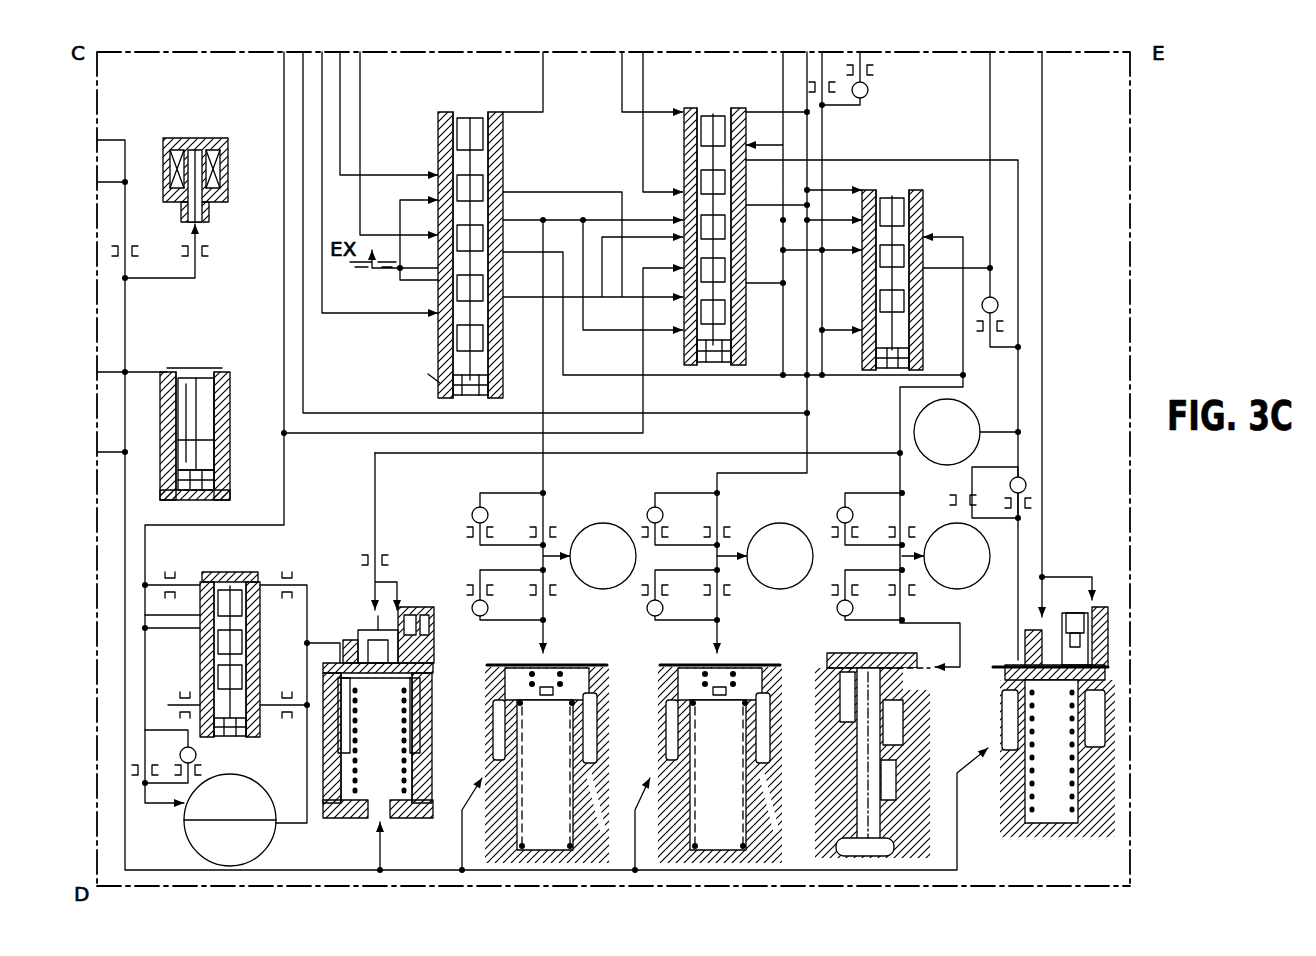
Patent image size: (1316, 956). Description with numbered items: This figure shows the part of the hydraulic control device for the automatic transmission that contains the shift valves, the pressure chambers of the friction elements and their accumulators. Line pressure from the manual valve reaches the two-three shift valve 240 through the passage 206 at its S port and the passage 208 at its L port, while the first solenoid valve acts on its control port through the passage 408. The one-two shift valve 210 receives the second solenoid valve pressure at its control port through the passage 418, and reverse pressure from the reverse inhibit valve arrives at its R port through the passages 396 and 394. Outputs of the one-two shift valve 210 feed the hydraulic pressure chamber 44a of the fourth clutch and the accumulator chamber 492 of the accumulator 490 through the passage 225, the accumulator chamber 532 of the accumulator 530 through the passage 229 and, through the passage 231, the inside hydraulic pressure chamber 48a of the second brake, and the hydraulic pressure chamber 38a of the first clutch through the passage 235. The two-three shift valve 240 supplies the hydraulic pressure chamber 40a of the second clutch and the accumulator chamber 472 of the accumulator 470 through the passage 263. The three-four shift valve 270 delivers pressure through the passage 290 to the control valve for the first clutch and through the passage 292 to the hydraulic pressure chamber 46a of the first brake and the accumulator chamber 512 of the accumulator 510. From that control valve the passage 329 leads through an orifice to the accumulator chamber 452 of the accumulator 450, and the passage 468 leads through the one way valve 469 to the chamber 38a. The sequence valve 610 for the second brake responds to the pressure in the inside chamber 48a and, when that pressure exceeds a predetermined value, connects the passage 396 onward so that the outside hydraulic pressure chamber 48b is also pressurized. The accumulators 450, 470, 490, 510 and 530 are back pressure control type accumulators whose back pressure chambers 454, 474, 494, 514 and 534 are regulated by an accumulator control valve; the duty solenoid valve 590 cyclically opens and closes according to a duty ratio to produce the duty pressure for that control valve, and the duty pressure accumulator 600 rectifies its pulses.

The duty solenoid valve 590 is at (214, 214).
The duty pressure accumulator 600 is at (228, 440).
The passage 208 is at (340, 118).
The passage 206 is at (322, 153).
The passage 396 is at (284, 308).
The passage 394 is at (316, 433).
The 2-3 shift valve 240 is at (438, 390).
The passage 408 is at (543, 86).
The passage 418 is at (622, 118).
The 1-2 shift valve 210 is at (709, 366).
The passage 225 is at (807, 440).
The passage 235 is at (1022, 160).
The passage 290 is at (990, 88).
The passage 329 is at (1042, 92).
The 3-4 shift valve 270 is at (876, 372).
The passage 292 is at (965, 376).
The hydraulic pressure chamber 38a is at (970, 420).
The one way valve 469 is at (1022, 506).
The passage 468 is at (1042, 546).
The hydraulic pressure chamber 40a is at (611, 524).
The passage 263 is at (543, 473).
The hydraulic pressure chamber 44a is at (784, 523).
The hydraulic pressure chamber 46a is at (968, 584).
The passage 229 is at (375, 508).
The B2 sequence valve 610 is at (262, 568).
The passage 231 is at (307, 834).
The accumulator chamber 532 is at (307, 735).
The inside hydraulic pressure chamber 48a is at (258, 843).
The outside hydraulic pressure chamber 48b is at (184, 808).
The accumulator 530 is at (356, 642).
The back pressure chamber 534 is at (388, 812).
The accumulator 470 is at (572, 665).
The accumulator chamber 472 is at (520, 665).
The back pressure chamber 474 is at (597, 714).
The accumulator 490 is at (748, 665).
The accumulator chamber 492 is at (700, 665).
The back pressure chamber 494 is at (772, 672).
The accumulator 510 is at (886, 656).
The accumulator chamber 452 is at (925, 660).
The accumulator chamber 512 is at (892, 708).
The back pressure chamber 514 is at (856, 780).
The accumulator 450 is at (1036, 840).
The back pressure chamber 454 is at (1100, 719).